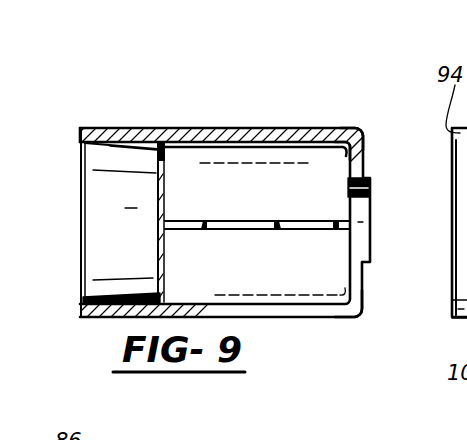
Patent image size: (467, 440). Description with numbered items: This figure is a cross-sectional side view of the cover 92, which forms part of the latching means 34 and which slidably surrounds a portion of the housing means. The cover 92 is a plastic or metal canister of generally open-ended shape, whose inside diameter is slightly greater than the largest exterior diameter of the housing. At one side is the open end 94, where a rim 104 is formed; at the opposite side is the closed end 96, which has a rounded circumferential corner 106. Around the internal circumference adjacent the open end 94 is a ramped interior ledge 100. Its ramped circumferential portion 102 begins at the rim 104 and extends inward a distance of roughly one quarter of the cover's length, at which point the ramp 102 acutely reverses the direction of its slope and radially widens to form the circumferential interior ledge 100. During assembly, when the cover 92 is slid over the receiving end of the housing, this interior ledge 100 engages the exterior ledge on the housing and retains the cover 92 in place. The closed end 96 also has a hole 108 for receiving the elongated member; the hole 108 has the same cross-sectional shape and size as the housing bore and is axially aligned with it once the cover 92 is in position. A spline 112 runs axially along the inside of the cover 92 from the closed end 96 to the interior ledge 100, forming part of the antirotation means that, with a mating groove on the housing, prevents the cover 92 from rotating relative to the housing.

The latching means 34 is at (273, 126).
The cover 92 is at (357, 128).
The open end 94 is at (80, 148).
The closed end 96 is at (364, 310).
The ramped interior ledge 100 is at (161, 150).
The ramped circumferential portion 102 is at (118, 150).
The rim 104 is at (80, 132).
The rounded circumferential corner 106 is at (358, 138).
The hole 108 is at (355, 200).
The spline 112 is at (341, 241).